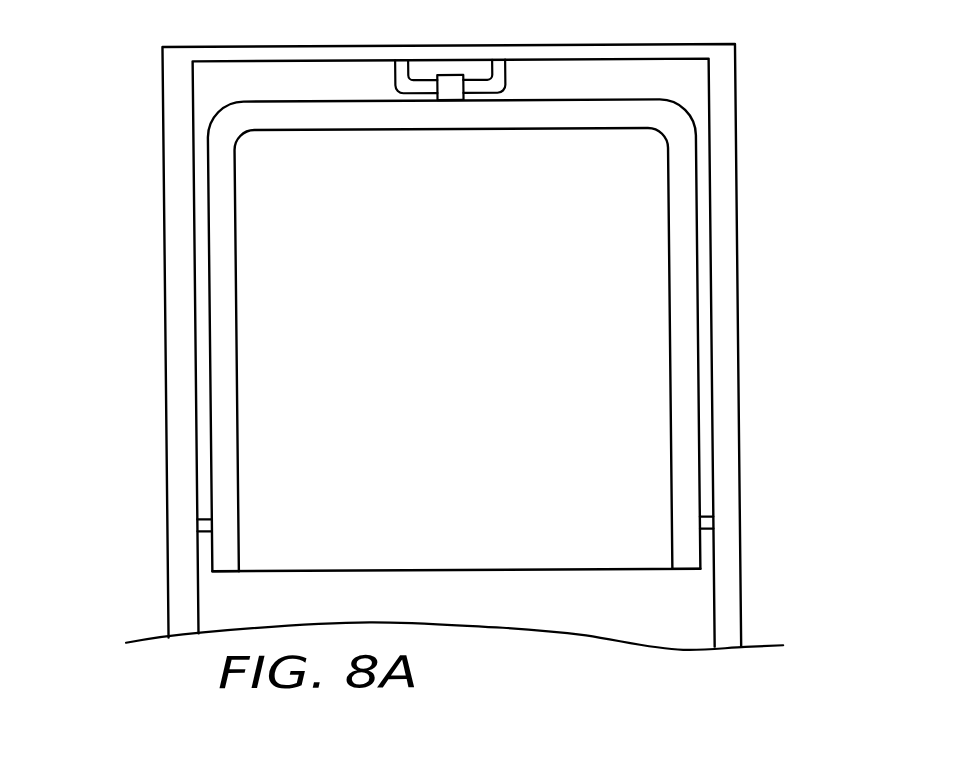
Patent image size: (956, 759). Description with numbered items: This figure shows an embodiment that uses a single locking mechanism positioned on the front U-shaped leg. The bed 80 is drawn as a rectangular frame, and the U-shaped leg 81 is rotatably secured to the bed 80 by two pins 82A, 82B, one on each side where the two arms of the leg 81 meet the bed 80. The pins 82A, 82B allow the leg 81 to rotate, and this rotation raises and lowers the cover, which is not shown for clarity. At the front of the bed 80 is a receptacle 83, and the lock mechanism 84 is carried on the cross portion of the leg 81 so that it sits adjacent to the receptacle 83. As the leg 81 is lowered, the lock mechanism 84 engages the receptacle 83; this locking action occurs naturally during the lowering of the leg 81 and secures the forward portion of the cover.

The bed 80 is at (722, 175).
The leg 81 is at (677, 272).
The pin 82A is at (205, 523).
The pin 82B is at (710, 524).
The receptacle 83 is at (476, 88).
The lock mechanism 84 is at (454, 90).